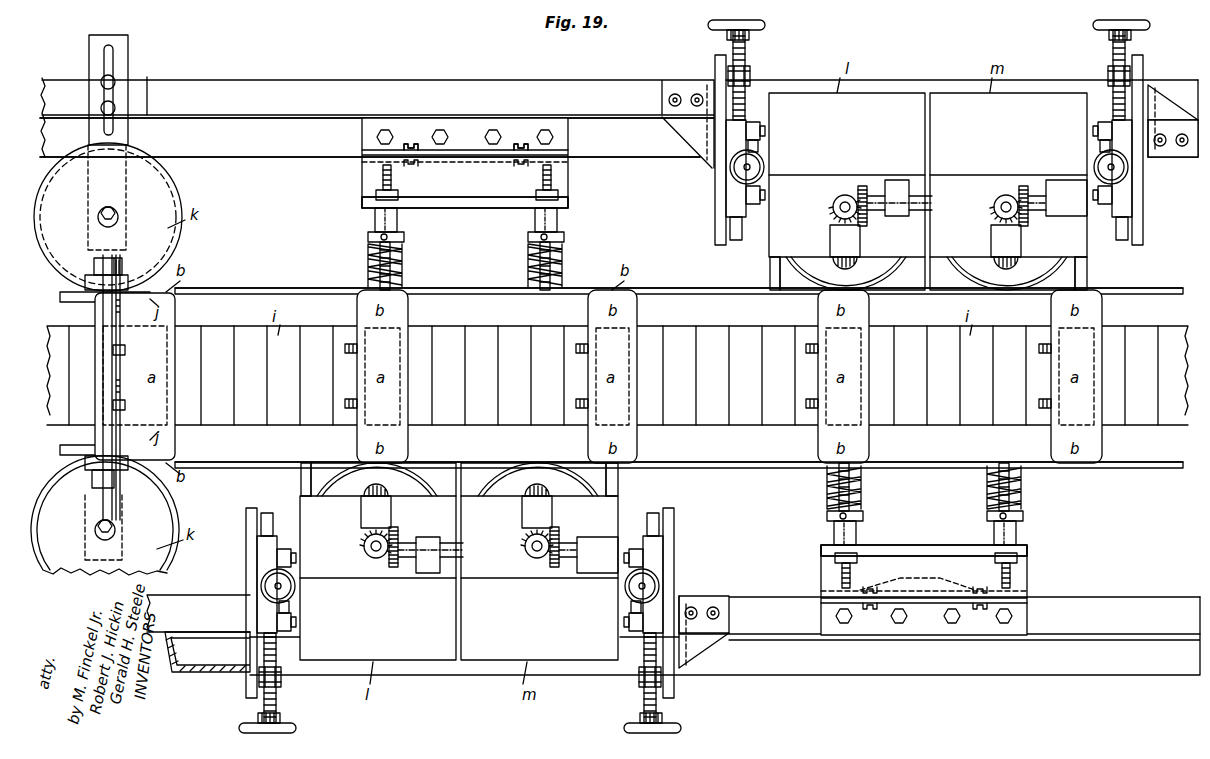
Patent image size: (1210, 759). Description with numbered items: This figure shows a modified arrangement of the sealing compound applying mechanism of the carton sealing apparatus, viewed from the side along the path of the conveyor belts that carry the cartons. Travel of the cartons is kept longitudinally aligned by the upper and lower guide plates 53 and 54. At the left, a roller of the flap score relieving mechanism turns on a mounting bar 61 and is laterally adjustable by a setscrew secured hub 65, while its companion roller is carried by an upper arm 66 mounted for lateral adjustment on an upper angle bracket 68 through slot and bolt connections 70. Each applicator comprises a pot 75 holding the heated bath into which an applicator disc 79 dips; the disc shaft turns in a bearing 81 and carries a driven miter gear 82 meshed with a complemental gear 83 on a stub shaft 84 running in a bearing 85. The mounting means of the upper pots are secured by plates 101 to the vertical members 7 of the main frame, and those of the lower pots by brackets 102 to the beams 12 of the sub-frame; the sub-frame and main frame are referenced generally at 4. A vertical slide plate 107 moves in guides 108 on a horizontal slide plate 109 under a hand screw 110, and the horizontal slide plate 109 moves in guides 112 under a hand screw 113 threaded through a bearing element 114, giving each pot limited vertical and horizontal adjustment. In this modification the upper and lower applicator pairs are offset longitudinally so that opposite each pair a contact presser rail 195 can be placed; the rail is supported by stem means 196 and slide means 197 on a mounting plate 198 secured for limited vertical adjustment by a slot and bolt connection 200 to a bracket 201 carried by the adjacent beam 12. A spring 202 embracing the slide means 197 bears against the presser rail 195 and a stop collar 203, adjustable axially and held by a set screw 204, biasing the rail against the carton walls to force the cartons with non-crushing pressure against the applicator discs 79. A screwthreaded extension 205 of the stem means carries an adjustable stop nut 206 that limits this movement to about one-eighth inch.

The frame rail 4 is at (628, 85).
The vertical members of the main frame 7 is at (198, 673).
The sub-frame beams 12 is at (252, 150).
The guide plate 53 is at (232, 288).
The guide plate 54 is at (228, 468).
The mounting bar 61 is at (116, 396).
The setscrew secured hubs 65 is at (122, 272).
The upper arm 66 is at (128, 54).
The upper angle bracket 68 is at (147, 96).
The slot and bolt connections 70 is at (101, 107).
The pot 75 is at (770, 270).
The applicator disc 79 is at (815, 264).
The bearing 81 is at (830, 222).
The driven miter gear 82 is at (840, 202).
The complemental gear 83 is at (860, 186).
The stub shaft 84 is at (940, 196).
The bearing 85 is at (903, 182).
The plates 101 is at (715, 210).
The brackets 102 is at (1160, 95).
The vertical slide plate 107 is at (760, 146).
The guides 108 is at (763, 128).
The horizontal slide plate 109 is at (730, 232).
The hand screw 110 is at (765, 165).
The guides 112 is at (726, 184).
The hand screw 113 is at (745, 48).
The bearing element 114 is at (750, 74).
The contact presser rail 195 is at (466, 288).
The stem means 196 is at (403, 268).
The slide means 197 is at (375, 222).
The mounting plate 198 is at (365, 178).
The slot and bolt connection 200 is at (413, 140).
The bracket 201 is at (570, 154).
The spring 202 is at (370, 262).
The stop collar 203 is at (405, 237).
The set screw 204 is at (368, 238).
The screwthreaded extension 205 is at (395, 178).
The stop nut 206 is at (372, 197).